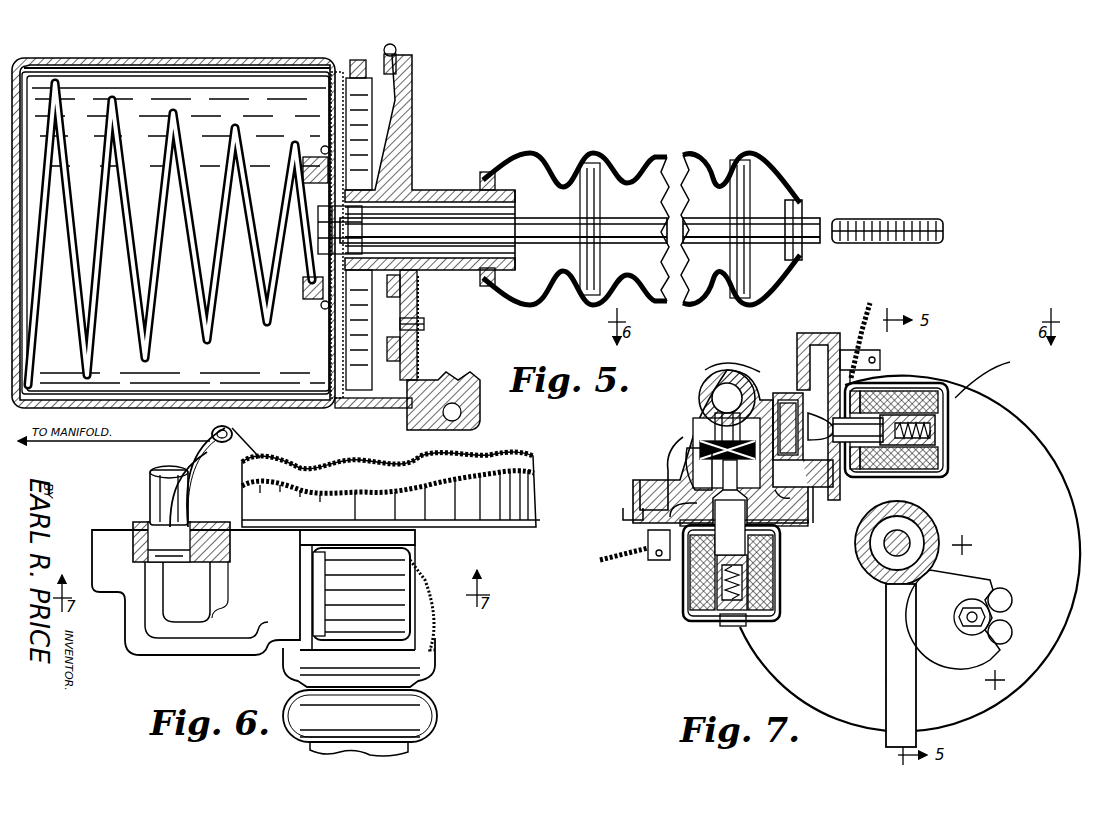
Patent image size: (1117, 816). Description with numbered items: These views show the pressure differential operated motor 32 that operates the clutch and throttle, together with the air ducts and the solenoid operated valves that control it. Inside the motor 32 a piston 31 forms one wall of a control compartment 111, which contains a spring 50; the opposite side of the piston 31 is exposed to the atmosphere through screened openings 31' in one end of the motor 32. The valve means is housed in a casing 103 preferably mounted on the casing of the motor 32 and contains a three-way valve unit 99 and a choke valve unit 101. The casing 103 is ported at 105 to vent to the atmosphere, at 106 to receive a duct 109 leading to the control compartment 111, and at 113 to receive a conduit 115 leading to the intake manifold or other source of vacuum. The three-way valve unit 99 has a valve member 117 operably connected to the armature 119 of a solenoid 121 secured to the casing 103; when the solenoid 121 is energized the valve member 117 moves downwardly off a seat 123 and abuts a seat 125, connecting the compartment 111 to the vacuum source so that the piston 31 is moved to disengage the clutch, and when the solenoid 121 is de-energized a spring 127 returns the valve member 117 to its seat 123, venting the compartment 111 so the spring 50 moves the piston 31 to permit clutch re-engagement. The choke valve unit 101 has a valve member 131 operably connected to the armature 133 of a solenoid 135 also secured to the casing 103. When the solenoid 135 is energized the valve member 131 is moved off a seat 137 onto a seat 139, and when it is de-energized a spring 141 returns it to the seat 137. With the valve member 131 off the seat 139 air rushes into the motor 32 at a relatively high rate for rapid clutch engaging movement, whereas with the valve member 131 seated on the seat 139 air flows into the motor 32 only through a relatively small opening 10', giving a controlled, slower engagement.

In FIG. 5, the motor 32 is at (246, 50).
In FIG. 7, the motor 32 is at (1005, 400).
In FIG. 6, the motor 32 is at (490, 535).
In FIG. 5, the control compartment 111 is at (118, 78).
In FIG. 5, the spring 50 is at (212, 328).
In FIG. 5, the piston 31 is at (410, 217).
In FIG. 5, the screened openings 31' is at (436, 327).
In FIG. 7, the screened openings 31' is at (978, 619).
In FIG. 7, the three-way valve unit 99 is at (672, 433).
In FIG. 7, the choke valve unit 101 is at (1014, 361).
In FIG. 7, the casing 103 is at (813, 333).
In FIG. 6, the casing 103 is at (245, 652).
In FIG. 7, the port 105 is at (815, 495).
In FIG. 6, the port 106 is at (150, 548).
In FIG. 6, the duct 109 is at (160, 500).
In FIG. 7, the port 113 is at (727, 383).
In FIG. 6, the conduit 115 is at (240, 436).
In FIG. 7, the valve member 117 is at (690, 440).
In FIG. 7, the armature 119 is at (700, 560).
In FIG. 7, the solenoid 121 is at (678, 612).
In FIG. 7, the seat 123 is at (700, 405).
In FIG. 7, the seat 125 is at (695, 475).
In FIG. 7, the spring 127 is at (712, 622).
In FIG. 7, the valve member 131 is at (790, 393).
In FIG. 7, the armature 133 is at (900, 395).
In FIG. 7, the solenoid 135 is at (930, 480).
In FIG. 6, the solenoid 135 is at (405, 580).
In FIG. 7, the seat 137 is at (770, 410).
In FIG. 7, the seat 139 is at (832, 470).
In FIG. 7, the spring 141 is at (950, 445).
In FIG. 7, the small opening 10' is at (789, 503).